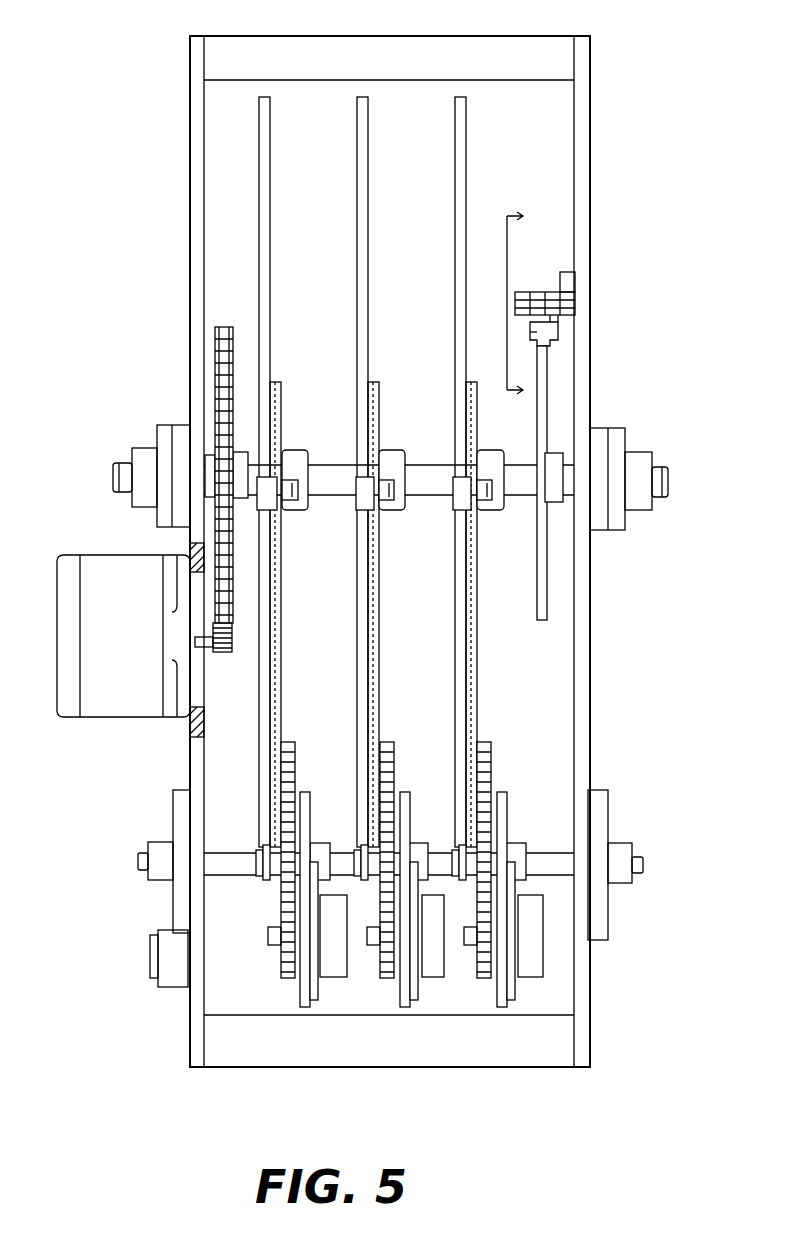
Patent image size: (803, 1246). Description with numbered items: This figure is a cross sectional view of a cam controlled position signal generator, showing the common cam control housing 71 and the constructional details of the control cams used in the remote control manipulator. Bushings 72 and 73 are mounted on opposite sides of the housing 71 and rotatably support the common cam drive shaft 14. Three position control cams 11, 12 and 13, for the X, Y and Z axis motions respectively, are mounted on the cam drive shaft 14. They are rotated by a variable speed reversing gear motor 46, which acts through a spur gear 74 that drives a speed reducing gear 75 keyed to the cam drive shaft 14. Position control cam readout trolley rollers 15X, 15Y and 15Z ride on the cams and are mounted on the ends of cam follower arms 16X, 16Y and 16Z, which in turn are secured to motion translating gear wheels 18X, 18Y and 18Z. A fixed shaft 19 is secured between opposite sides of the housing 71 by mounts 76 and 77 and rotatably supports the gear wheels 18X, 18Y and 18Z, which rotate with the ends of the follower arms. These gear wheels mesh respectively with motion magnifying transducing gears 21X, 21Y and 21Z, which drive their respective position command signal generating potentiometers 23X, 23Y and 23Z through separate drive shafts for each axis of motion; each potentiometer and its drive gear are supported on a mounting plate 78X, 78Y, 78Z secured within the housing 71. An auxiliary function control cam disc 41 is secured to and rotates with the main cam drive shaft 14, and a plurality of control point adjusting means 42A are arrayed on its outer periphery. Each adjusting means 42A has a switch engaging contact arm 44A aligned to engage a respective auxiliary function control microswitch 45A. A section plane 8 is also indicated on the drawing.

The cam control housing 71 is at (408, 36).
The position control cam 11 is at (270, 186).
The position control cam 12 is at (368, 265).
The position control cam 13 is at (462, 208).
The common cam drive shaft 14 is at (330, 492).
The position control cam readout trolley roller 15X is at (266, 496).
The position control cam readout trolley roller 15Y is at (362, 497).
The position control cam readout trolley roller 15Z is at (458, 497).
The cam follower arm 16X is at (282, 628).
The cam follower arm 16Y is at (380, 628).
The cam follower arm 16Z is at (478, 628).
The motion translating gear wheel 18X is at (294, 772).
The motion translating gear wheel 18Y is at (395, 772).
The motion translating gear wheel 18Z is at (492, 772).
The fixed shaft 19 is at (240, 856).
The motion magnifying transducing gear 21X is at (283, 970).
The motion magnifying transducing gear 21Y is at (382, 970).
The motion magnifying transducing gear 21Z is at (479, 970).
The position command signal generating potentiometer 23X is at (330, 965).
The position command signal generating potentiometer 23Y is at (433, 965).
The position command signal generating potentiometer 23Z is at (530, 965).
The auxiliary function control cam disc 41 is at (537, 428).
The control point adjusting means 42A is at (530, 333).
The switch engaging contact arm 44A is at (560, 327).
The auxiliary function control microswitch 45A is at (562, 292).
The variable speed reversing gear motor 46 is at (97, 703).
The bushing 72 is at (162, 430).
The bushing 73 is at (618, 440).
The spur gear 74 is at (222, 655).
The speed reducing gear 75 is at (224, 327).
The mount 76 is at (172, 838).
The mount 77 is at (612, 838).
The mounting plate 78X is at (307, 815).
The mounting plate 78Y is at (407, 815).
The mounting plate 78Z is at (505, 815).
The section line 8 is at (528, 310).